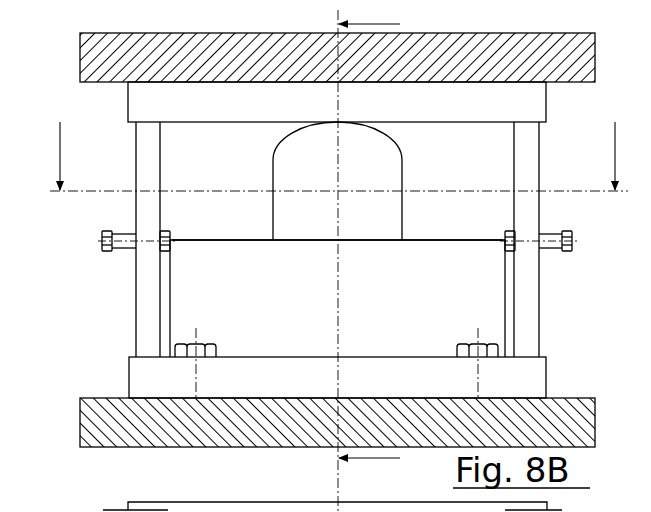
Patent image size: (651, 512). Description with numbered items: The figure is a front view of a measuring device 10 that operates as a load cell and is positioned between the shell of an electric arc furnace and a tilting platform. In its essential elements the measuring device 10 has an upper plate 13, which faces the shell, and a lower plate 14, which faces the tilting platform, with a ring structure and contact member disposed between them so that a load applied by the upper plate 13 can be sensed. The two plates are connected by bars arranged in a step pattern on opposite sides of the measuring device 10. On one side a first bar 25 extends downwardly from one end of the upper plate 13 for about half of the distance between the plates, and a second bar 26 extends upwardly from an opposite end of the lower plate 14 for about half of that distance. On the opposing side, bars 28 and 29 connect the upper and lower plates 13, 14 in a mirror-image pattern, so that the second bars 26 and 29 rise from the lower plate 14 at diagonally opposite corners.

The measuring device 10 is at (100, 266).
The upper plate 13 is at (126, 104).
The lower plate 14 is at (128, 383).
The first bar 25 is at (135, 163).
The second bar 26 is at (135, 283).
The first bar 28 is at (540, 160).
The second bar 29 is at (540, 313).